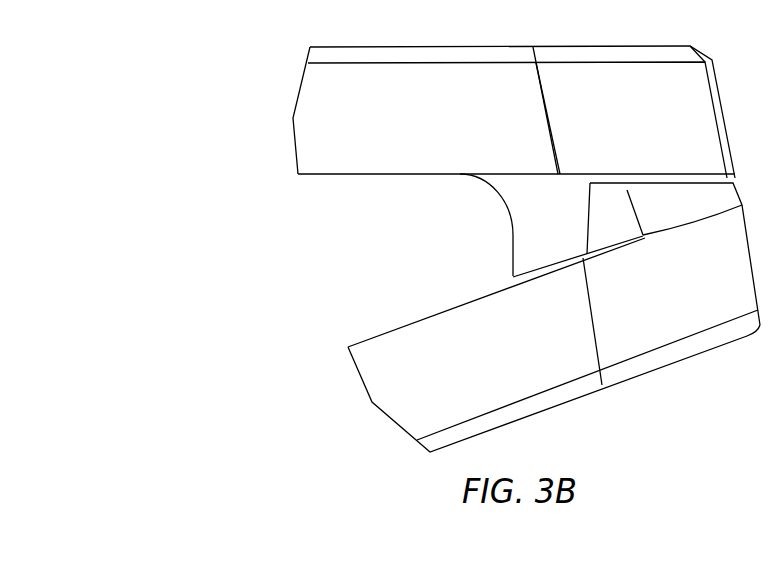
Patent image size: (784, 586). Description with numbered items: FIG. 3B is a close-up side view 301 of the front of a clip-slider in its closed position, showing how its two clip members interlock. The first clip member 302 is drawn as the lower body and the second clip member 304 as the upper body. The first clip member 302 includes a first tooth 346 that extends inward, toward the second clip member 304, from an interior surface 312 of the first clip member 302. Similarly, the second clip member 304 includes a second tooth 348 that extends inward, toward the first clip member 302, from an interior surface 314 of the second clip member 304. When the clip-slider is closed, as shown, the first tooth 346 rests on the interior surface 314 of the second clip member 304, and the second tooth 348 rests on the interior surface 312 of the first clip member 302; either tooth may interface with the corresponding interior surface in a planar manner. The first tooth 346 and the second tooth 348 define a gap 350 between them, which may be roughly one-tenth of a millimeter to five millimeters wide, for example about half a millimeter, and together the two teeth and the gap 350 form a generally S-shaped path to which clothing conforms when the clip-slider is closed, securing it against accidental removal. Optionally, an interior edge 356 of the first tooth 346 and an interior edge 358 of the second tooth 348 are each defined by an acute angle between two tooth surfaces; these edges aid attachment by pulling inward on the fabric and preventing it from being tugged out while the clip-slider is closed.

The close-up side view 301 is at (228, 341).
The first clip member 302 is at (501, 360).
The second clip member 304 is at (433, 121).
The interior surface of the first clip member 312 is at (404, 316).
The interior surface of the second clip member 314 is at (350, 181).
The first tooth 346 is at (689, 216).
The second tooth 348 is at (561, 225).
The gap 350 is at (624, 240).
The interior edge of the first tooth 356 is at (618, 193).
The interior edge of the second tooth 358 is at (504, 281).